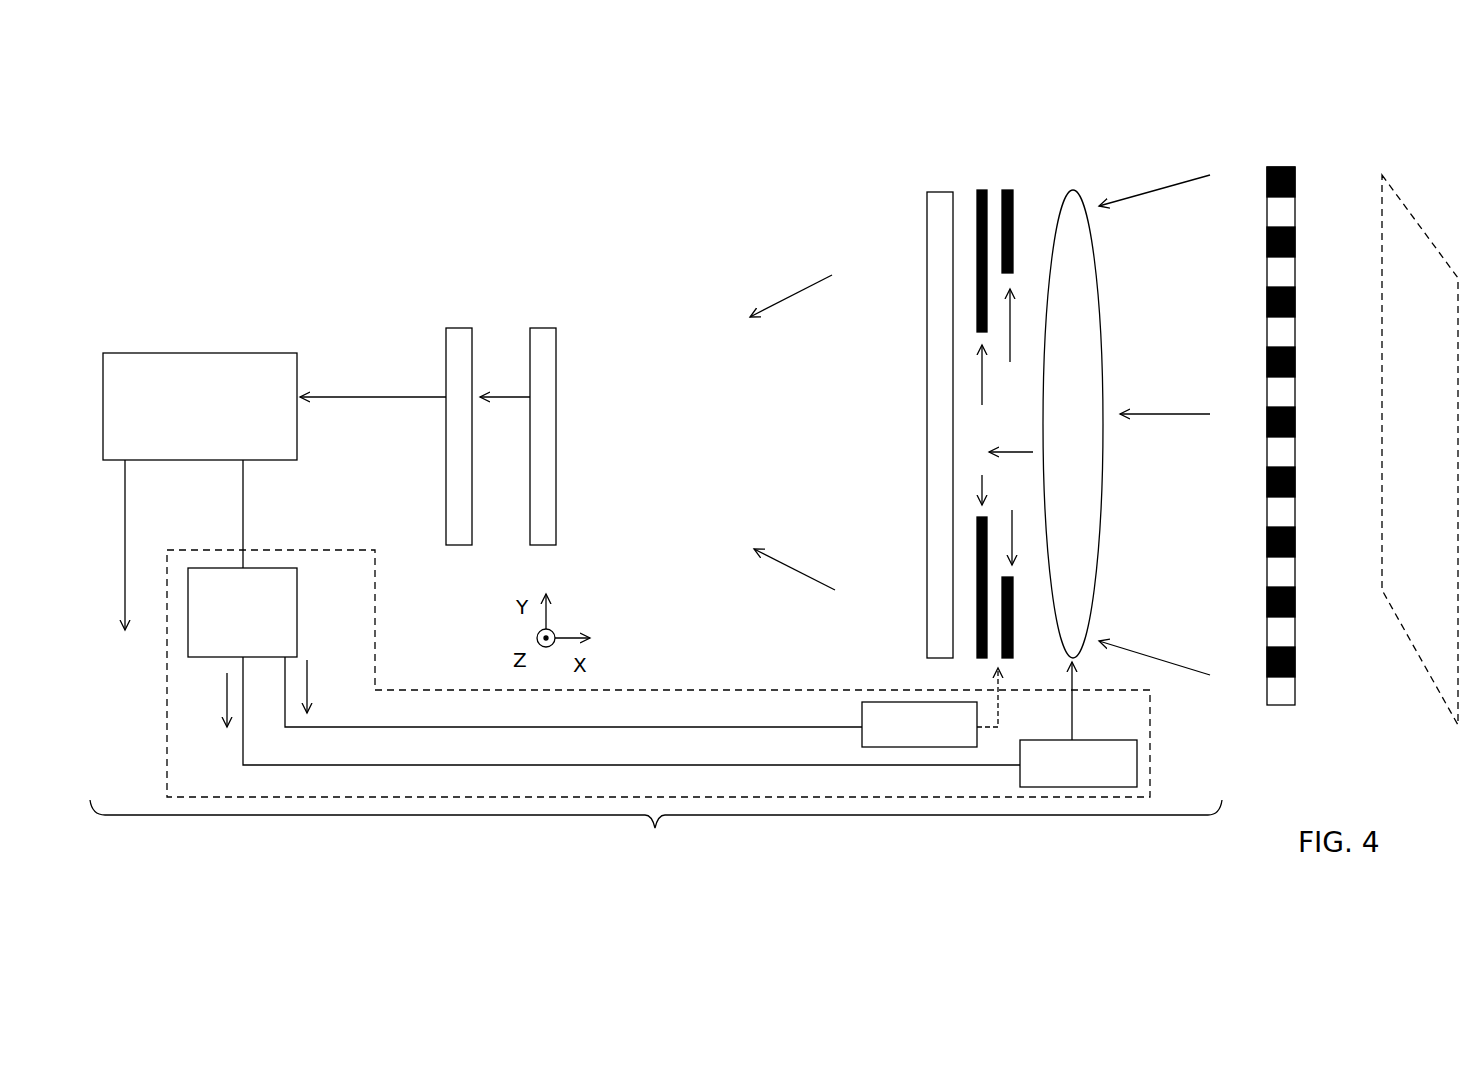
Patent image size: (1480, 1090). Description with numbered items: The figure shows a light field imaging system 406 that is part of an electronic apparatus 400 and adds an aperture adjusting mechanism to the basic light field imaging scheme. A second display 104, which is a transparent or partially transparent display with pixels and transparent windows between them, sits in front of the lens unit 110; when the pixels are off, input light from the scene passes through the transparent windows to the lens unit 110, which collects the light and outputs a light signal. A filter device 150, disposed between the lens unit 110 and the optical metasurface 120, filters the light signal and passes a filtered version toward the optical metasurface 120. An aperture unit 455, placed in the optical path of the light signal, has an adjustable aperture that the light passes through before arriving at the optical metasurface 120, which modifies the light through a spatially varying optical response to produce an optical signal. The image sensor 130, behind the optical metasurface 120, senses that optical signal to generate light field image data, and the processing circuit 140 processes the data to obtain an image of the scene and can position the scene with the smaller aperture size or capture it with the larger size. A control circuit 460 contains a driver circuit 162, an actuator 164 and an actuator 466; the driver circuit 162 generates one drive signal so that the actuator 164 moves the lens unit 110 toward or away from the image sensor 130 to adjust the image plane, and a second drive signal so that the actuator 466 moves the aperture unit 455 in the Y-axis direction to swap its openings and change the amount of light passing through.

The electronic apparatus 400 is at (455, 180).
The processing circuit 140 is at (222, 353).
The image sensor 130 is at (462, 328).
The optical metasurface 120 is at (540, 328).
The control circuit 460 is at (320, 550).
The driver circuit 162 is at (297, 630).
The filter device 150 is at (934, 192).
The aperture unit 455 is at (1030, 183).
The lens unit 110 is at (1073, 190).
The second display 104 is at (1280, 167).
The actuator 466 is at (875, 702).
The actuator 164 is at (1137, 746).
The light field imaging system 406 is at (656, 833).